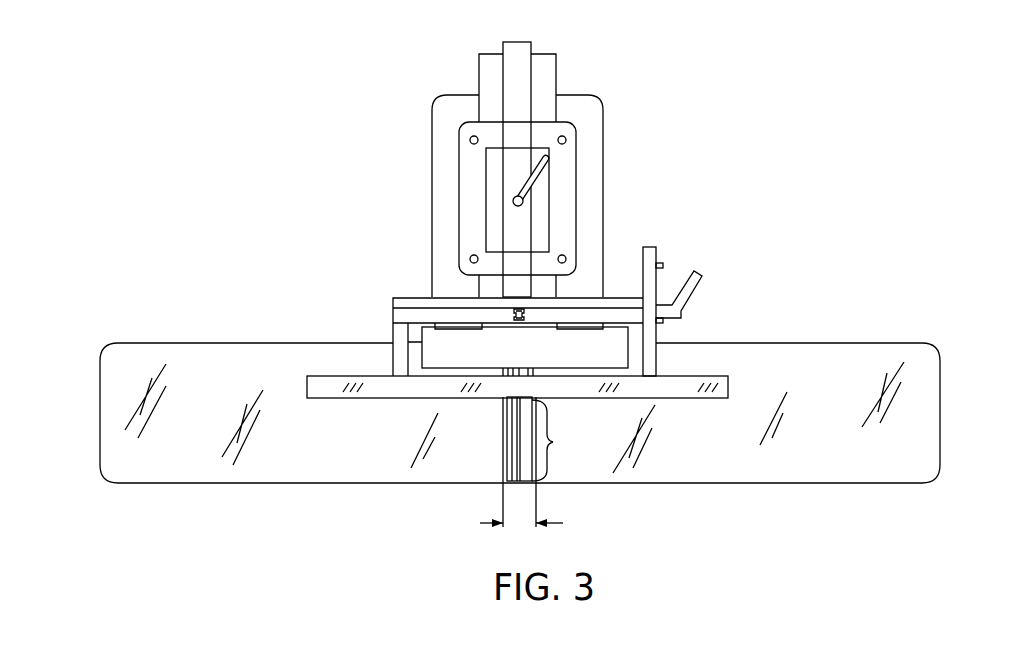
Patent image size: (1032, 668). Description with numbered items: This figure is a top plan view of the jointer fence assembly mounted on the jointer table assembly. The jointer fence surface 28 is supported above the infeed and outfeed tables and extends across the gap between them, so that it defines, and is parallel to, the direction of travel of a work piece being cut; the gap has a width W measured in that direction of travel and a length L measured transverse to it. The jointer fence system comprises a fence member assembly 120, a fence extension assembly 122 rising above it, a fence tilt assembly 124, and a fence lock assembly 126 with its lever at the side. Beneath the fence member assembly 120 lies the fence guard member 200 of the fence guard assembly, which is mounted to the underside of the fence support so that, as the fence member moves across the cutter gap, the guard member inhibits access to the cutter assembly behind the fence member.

The jointer fence surface 28 is at (688, 402).
The fence member assembly 120 is at (733, 378).
The fence extension assembly 122 is at (613, 120).
The fence tilt assembly 124 is at (383, 320).
The fence lock assembly 126 is at (693, 310).
The fence guard member 200 is at (430, 352).